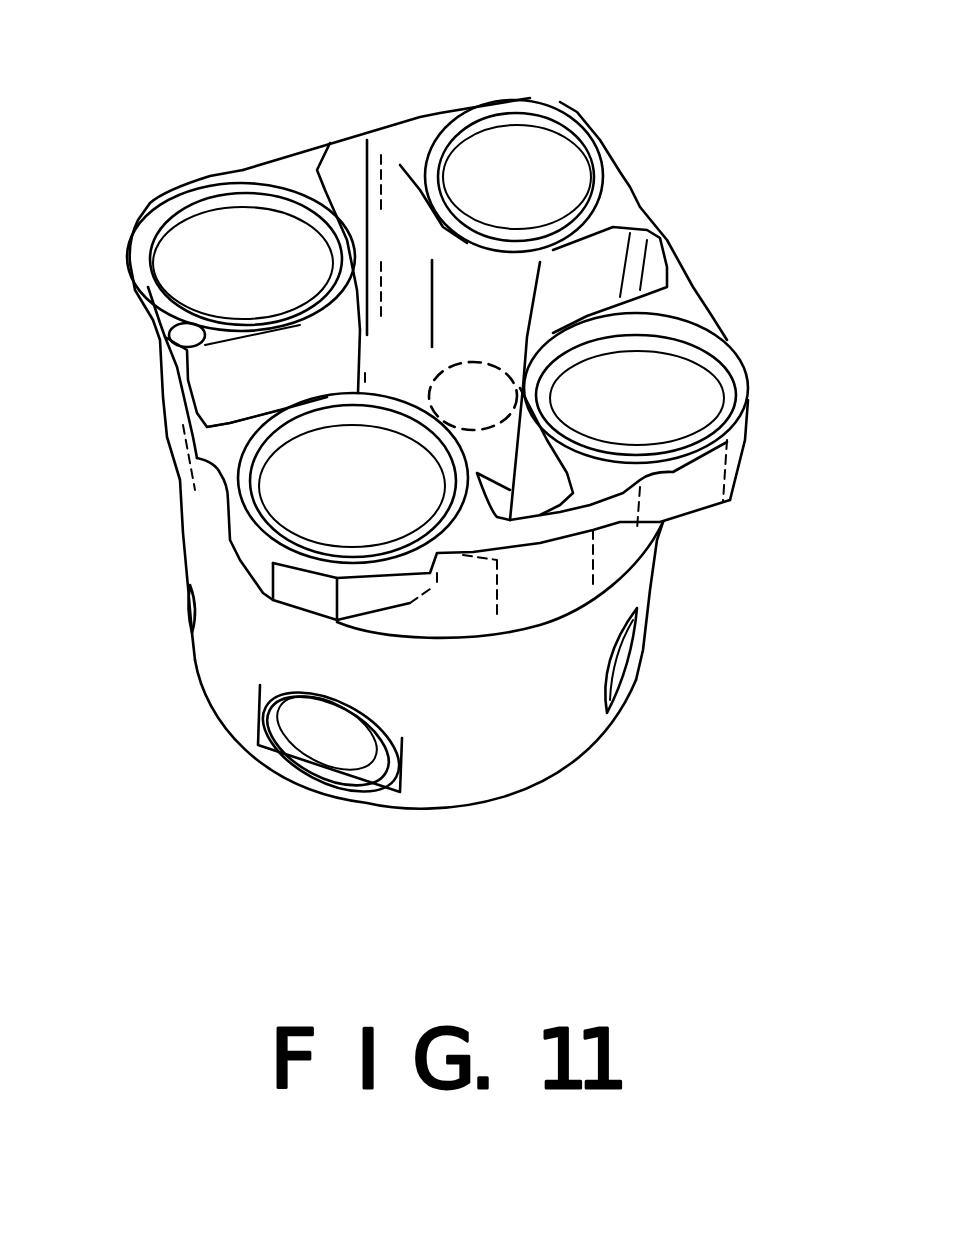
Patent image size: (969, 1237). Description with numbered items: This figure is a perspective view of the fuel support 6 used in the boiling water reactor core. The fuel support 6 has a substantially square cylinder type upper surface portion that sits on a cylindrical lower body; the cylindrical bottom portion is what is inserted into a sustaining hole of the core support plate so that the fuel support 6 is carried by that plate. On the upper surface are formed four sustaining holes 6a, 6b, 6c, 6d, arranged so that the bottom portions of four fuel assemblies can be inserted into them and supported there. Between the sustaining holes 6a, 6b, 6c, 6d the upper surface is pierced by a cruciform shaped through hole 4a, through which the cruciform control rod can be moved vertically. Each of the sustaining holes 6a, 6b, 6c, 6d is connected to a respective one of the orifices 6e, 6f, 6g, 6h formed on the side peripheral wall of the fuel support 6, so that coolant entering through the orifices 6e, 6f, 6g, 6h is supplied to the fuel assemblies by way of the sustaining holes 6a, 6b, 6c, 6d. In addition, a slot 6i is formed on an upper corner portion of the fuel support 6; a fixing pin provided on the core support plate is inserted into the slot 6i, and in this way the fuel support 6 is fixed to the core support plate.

The fuel support 6 is at (281, 135).
The sustaining hole 6a is at (550, 178).
The sustaining hole 6b is at (680, 398).
The sustaining hole 6c is at (303, 512).
The sustaining hole 6d is at (183, 260).
The orifice 6e is at (483, 380).
The orifice 6f is at (620, 650).
The orifice 6g is at (327, 747).
The orifice 6h is at (187, 617).
The slot 6i is at (160, 308).
The cruciform through hole 4a is at (245, 386).